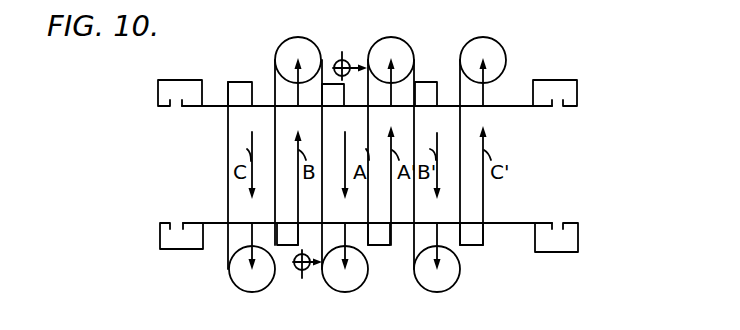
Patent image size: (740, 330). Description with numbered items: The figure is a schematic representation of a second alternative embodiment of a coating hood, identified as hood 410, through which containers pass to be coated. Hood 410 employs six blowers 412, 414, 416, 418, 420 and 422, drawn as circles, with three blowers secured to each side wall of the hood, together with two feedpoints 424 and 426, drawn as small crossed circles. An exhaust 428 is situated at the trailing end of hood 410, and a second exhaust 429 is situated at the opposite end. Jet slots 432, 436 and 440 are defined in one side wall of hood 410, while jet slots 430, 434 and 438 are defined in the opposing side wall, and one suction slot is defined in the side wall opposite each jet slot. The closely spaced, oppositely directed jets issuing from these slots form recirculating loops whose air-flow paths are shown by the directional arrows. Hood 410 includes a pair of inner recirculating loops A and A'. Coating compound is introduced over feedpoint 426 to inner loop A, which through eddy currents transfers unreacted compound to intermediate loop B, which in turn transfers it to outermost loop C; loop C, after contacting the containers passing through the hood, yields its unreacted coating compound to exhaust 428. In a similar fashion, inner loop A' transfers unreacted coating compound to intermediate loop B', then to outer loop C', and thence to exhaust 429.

The coating hood 410 is at (152, 152).
The blower 412 is at (502, 47).
The blower 414 is at (454, 281).
The blower 416 is at (396, 43).
The blower 418 is at (353, 289).
The blower 420 is at (292, 40).
The blower 422 is at (237, 283).
The feedpoint 424 is at (342, 52).
The feedpoint 426 is at (302, 278).
The exhaust 428 is at (173, 78).
The exhaust 429 is at (580, 90).
The jet slot 430 is at (483, 222).
The jet slot 432 is at (392, 107).
The jet slot 434 is at (392, 222).
The jet slot 436 is at (344, 107).
The jet slot 438 is at (297, 222).
The jet slot 440 is at (250, 108).